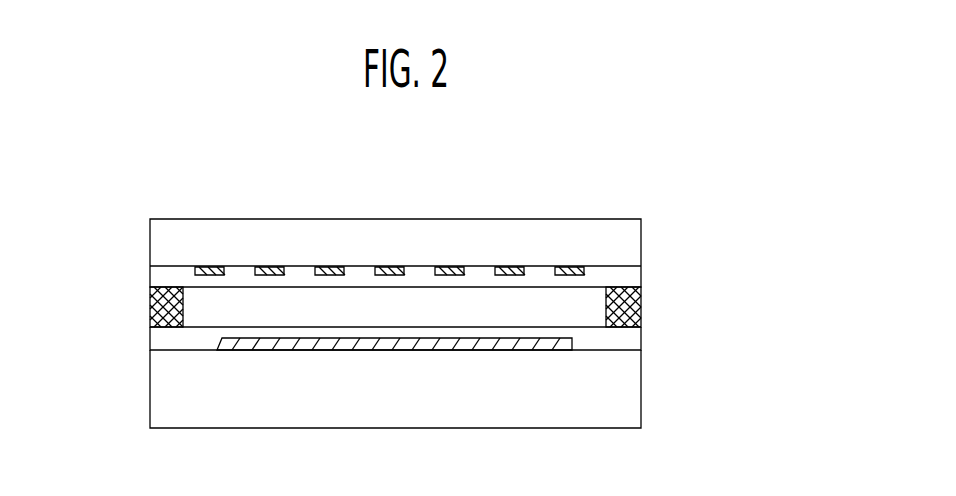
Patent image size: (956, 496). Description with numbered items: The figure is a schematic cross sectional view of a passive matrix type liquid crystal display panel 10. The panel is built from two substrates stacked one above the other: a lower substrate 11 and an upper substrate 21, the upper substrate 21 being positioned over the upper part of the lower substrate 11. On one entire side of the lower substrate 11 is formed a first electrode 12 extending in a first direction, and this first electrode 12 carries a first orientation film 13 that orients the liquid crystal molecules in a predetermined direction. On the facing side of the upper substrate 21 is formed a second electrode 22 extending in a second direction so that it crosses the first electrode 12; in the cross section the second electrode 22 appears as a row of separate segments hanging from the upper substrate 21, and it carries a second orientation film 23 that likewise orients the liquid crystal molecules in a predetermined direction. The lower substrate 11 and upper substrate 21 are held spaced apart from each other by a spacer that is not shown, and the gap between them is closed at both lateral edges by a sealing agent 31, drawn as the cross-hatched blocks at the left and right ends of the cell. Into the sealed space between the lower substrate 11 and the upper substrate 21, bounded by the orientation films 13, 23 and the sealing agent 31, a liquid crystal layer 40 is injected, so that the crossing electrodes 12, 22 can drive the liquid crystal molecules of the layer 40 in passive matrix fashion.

The liquid crystal display panel 10 is at (599, 186).
The lower substrate 11 is at (628, 387).
The first electrode 12 is at (428, 343).
The first orientation film 13 is at (628, 330).
The upper substrate 21 is at (628, 241).
The second electrode 22 is at (508, 265).
The second orientation film 23 is at (628, 274).
The sealing agent 31 is at (628, 304).
The liquid crystal layer 40 is at (427, 302).